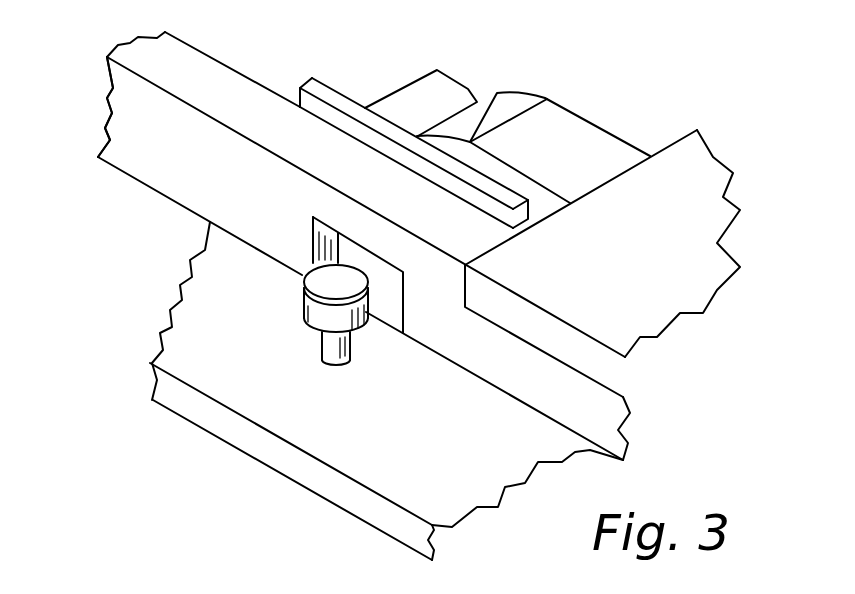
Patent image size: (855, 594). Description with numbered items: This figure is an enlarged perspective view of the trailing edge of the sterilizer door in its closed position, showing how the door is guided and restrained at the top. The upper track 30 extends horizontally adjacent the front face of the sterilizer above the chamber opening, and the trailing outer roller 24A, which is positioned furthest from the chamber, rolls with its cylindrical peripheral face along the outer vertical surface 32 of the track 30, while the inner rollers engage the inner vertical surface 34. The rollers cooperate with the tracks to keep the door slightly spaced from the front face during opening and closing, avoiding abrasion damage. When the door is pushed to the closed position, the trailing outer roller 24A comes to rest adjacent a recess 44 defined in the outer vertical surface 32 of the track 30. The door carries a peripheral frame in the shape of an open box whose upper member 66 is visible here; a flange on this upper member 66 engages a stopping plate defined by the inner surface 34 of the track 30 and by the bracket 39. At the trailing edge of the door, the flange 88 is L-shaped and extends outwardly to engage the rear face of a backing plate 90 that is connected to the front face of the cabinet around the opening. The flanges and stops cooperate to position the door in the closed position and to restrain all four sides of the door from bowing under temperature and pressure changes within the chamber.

The upper track 30 is at (138, 132).
The outer vertical surface 32 is at (221, 196).
The inner vertical surface 34 is at (272, 94).
The bracket 39 is at (643, 284).
The recess 44 is at (395, 290).
The trailing outer roller 24A is at (305, 307).
The upper member 66 is at (315, 412).
The flange 88 is at (432, 99).
The backing plate 90 is at (563, 140).